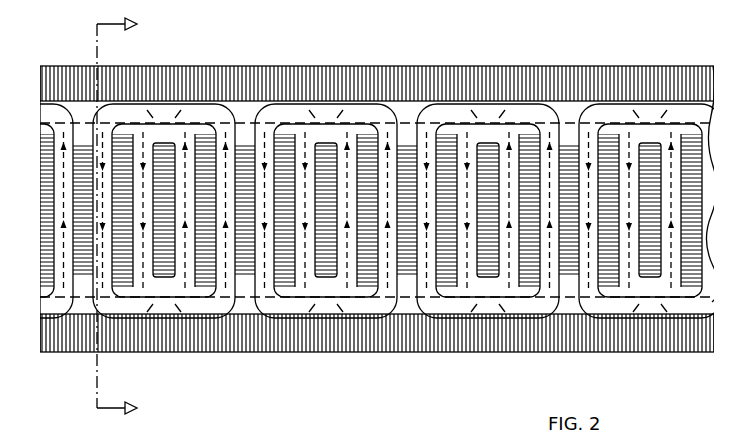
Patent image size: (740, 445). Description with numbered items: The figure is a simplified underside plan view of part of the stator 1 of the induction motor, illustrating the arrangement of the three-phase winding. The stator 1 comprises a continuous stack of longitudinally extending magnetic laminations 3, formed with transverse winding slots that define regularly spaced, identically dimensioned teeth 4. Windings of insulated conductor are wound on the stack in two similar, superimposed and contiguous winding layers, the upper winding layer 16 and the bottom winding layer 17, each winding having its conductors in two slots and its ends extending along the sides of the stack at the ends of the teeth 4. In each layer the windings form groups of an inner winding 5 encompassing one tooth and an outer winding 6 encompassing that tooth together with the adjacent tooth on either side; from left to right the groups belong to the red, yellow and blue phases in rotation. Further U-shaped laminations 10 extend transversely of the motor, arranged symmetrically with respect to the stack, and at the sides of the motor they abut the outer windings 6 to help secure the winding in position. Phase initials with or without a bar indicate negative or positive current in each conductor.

The stator 1 is at (124, 225).
The magnetic laminations 3 is at (176, 260).
The teeth 4 is at (442, 148).
The inner winding 5 is at (247, 132).
The outer winding 6 is at (252, 115).
The laminations 10 is at (312, 82).
The upper winding layer 16 is at (242, 308).
The bottom winding layer 17 is at (278, 305).